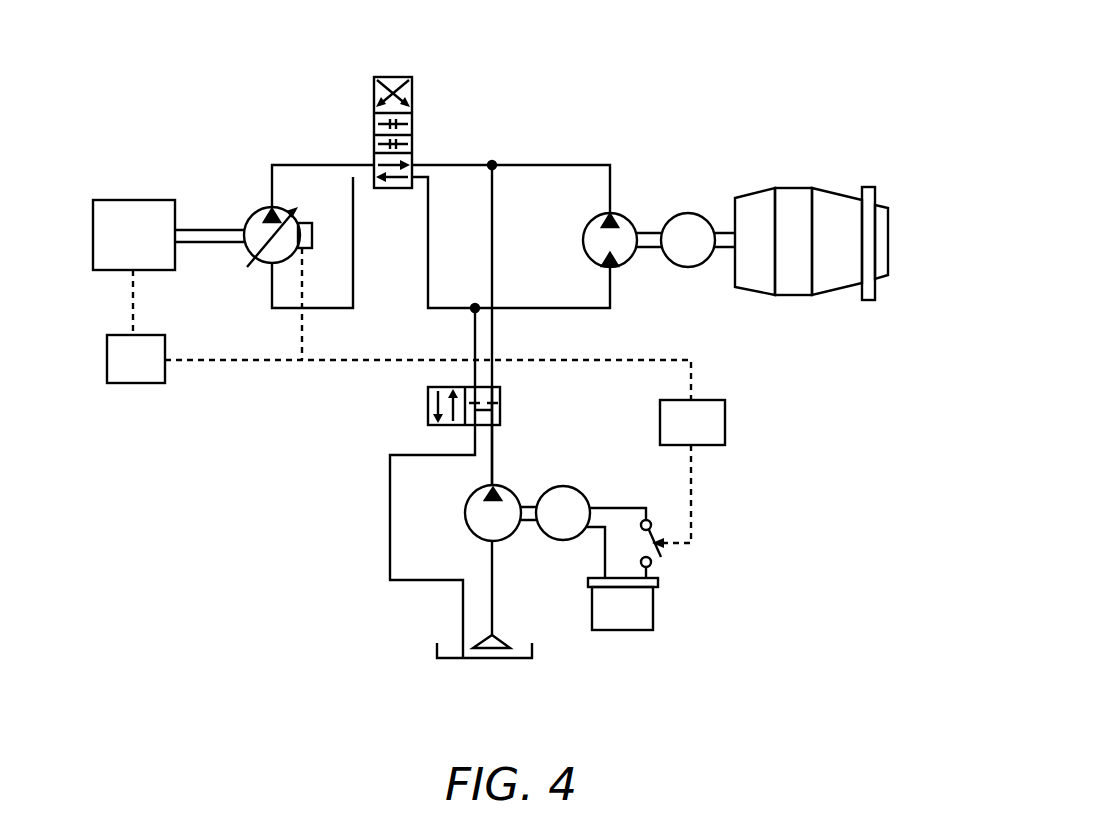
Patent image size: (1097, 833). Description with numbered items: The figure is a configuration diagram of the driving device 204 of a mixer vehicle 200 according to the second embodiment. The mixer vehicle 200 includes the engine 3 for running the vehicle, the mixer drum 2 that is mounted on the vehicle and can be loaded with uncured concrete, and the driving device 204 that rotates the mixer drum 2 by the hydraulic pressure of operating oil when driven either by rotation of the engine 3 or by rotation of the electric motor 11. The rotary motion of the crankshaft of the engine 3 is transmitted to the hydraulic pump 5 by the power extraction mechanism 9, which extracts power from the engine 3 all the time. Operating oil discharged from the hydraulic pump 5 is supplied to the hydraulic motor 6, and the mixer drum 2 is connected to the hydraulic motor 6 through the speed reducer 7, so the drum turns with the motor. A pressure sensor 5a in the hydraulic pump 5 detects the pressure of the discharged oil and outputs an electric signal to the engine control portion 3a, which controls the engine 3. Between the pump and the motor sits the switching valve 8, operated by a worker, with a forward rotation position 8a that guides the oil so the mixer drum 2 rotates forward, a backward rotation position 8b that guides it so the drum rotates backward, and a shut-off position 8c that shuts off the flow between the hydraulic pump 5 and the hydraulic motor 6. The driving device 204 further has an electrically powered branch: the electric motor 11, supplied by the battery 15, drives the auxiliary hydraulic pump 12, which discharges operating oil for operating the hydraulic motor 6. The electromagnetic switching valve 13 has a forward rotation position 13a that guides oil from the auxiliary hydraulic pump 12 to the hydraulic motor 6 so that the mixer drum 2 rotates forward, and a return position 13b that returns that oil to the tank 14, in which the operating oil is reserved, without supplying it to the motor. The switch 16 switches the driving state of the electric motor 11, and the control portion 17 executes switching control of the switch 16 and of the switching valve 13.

The mixer drum 2 is at (800, 188).
The engine 3 is at (138, 200).
The engine control portion 3a is at (137, 383).
The hydraulic pump 5 is at (262, 212).
The pressure sensor 5a is at (305, 223).
The hydraulic motor 6 is at (606, 213).
The speed reducer 7 is at (690, 213).
The switching valve 8 is at (435, 177).
The forward rotation position 8a is at (413, 158).
The backward rotation position 8b is at (413, 97).
The shut-off position 8c is at (413, 128).
The power extraction mechanism 9 is at (190, 230).
The electric motor 11 is at (563, 540).
The auxiliary hydraulic pump 12 is at (512, 541).
The switching valve 13 is at (500, 377).
The forward rotation position 13a is at (442, 387).
The return position 13b is at (497, 387).
The tank 14 is at (487, 658).
The battery 15 is at (623, 630).
The switch 16 is at (662, 555).
The control portion 17 is at (725, 423).
The mixer vehicle 200 is at (860, 90).
The driving device 204 is at (622, 91).